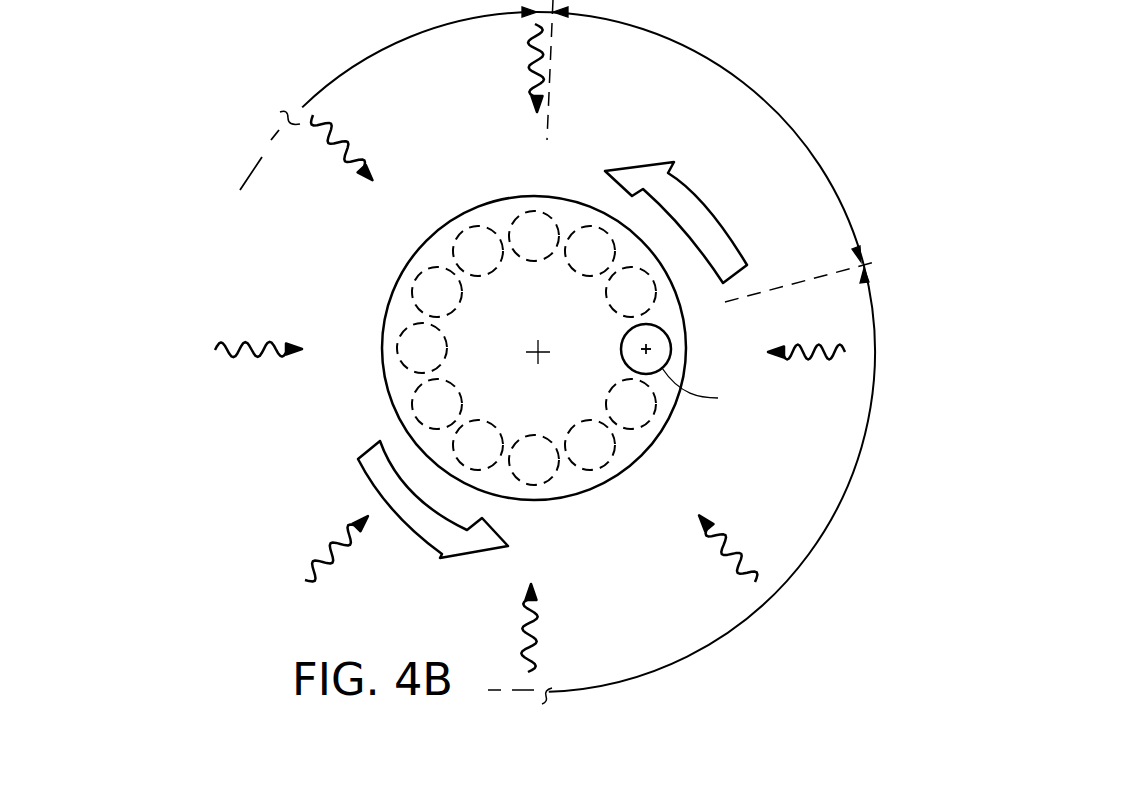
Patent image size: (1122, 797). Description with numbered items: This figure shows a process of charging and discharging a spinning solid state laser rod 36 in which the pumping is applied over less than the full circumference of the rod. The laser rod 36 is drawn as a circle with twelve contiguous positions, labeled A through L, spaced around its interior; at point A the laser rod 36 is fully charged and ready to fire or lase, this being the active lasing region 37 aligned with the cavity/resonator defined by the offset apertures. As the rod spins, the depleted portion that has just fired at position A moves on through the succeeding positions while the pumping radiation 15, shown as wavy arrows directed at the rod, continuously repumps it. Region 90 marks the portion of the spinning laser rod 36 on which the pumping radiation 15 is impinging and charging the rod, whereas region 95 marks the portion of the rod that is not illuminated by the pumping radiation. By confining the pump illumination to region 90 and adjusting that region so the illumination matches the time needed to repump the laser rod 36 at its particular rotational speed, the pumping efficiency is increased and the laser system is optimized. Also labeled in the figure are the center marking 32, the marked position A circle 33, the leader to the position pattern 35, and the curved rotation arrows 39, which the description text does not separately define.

The pumping radiation 15 is at (338, 132).
The turret axis center 32 is at (540, 355).
The filter position A 33 is at (668, 352).
The filter turret 35 is at (462, 344).
The laser rod 36 is at (660, 438).
The active lasing region 37 is at (701, 389).
The rotation direction 39 is at (727, 257).
The region 90 is at (408, 40).
The region 95 is at (686, 45).
The position A is at (655, 347).